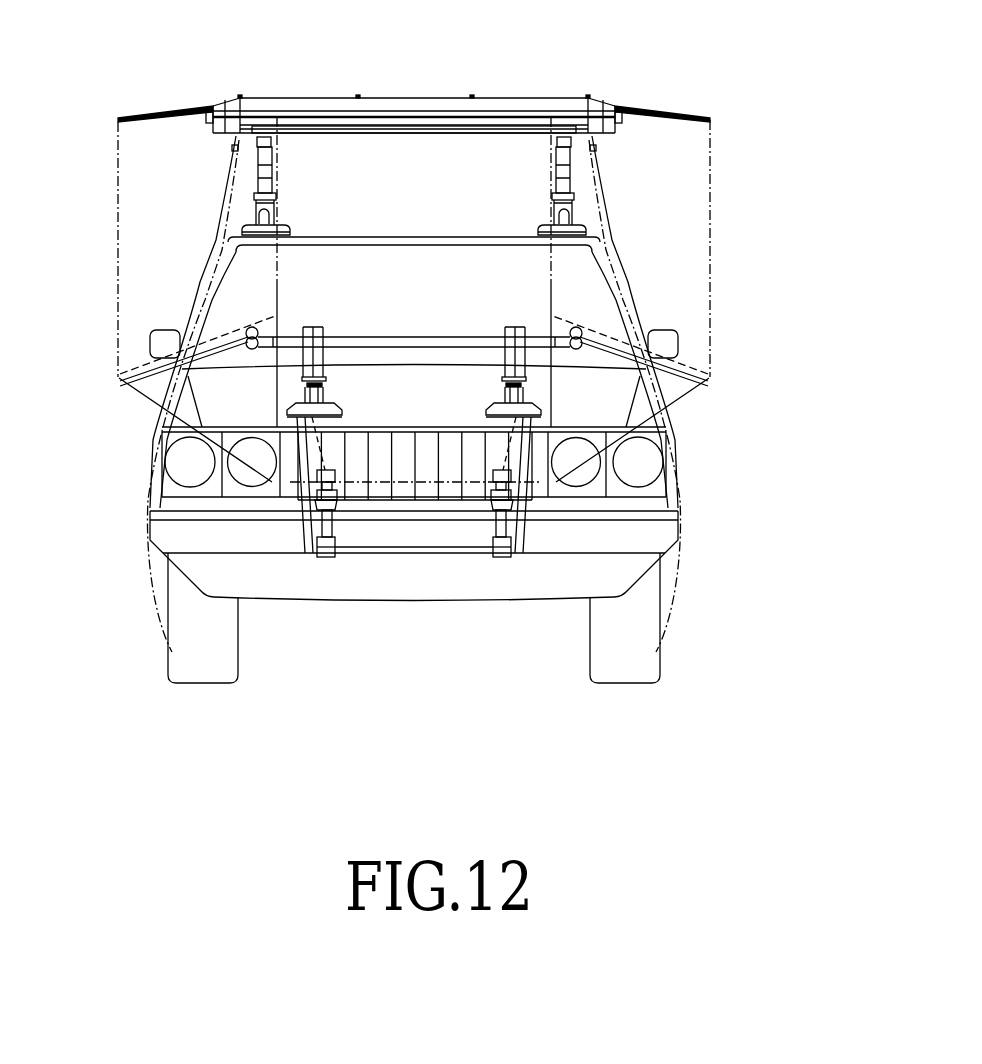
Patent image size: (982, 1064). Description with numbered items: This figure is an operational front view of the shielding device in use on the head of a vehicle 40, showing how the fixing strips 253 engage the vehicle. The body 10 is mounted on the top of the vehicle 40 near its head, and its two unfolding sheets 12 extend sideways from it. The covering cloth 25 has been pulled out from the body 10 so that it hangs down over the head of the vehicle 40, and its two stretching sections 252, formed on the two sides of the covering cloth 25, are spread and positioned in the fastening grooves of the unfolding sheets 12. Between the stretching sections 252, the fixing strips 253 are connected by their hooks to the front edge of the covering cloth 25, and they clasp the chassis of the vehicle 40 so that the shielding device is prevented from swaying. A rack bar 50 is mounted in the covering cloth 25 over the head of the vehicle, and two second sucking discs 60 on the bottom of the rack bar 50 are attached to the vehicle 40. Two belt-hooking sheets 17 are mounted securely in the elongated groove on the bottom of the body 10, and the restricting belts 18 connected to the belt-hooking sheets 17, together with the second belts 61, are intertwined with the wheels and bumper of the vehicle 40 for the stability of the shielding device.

The body 10 is at (537, 86).
The unfolding sheets 12 is at (167, 112).
The belt-hooking sheets 17 is at (596, 150).
The restricting belts 18 is at (148, 497).
The covering cloth 25 is at (550, 270).
The stretching sections 252 is at (711, 283).
The fixing strips 253 is at (326, 557).
The vehicle 40 is at (673, 670).
The rack bar 50 is at (340, 338).
The second sucking discs 60 is at (298, 392).
The second belts 61 is at (312, 452).